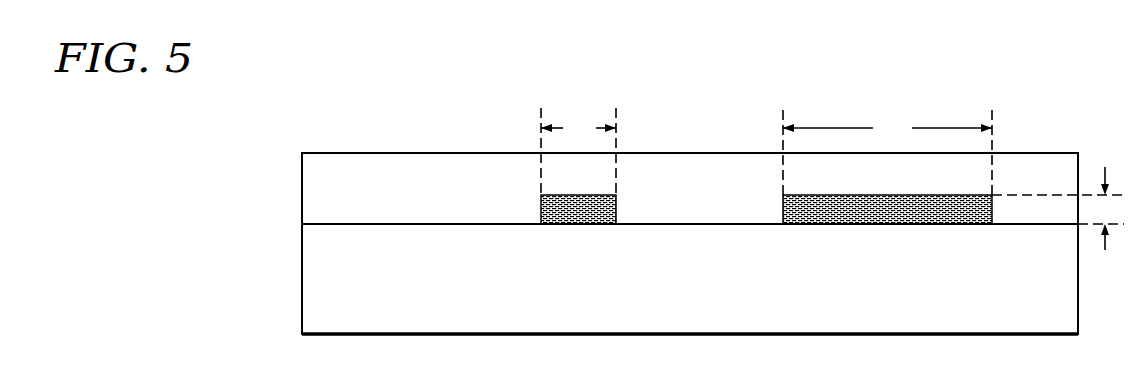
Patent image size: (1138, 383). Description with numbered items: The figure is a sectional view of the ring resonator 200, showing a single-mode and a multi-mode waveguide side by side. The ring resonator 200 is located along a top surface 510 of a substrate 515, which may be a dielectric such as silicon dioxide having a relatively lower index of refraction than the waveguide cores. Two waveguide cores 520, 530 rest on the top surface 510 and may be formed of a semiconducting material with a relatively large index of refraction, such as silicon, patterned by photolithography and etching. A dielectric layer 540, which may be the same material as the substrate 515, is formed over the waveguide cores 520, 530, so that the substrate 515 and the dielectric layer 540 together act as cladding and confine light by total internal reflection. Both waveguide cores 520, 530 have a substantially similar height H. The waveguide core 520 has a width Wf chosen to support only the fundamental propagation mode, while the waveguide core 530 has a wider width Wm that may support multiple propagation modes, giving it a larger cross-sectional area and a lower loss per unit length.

The ring resonator 200 is at (616, 213).
The top surface 510 is at (324, 223).
The substrate 515 is at (672, 292).
The waveguide core 520 is at (578, 210).
The waveguide core 530 is at (887, 210).
The dielectric layer 540 is at (680, 201).